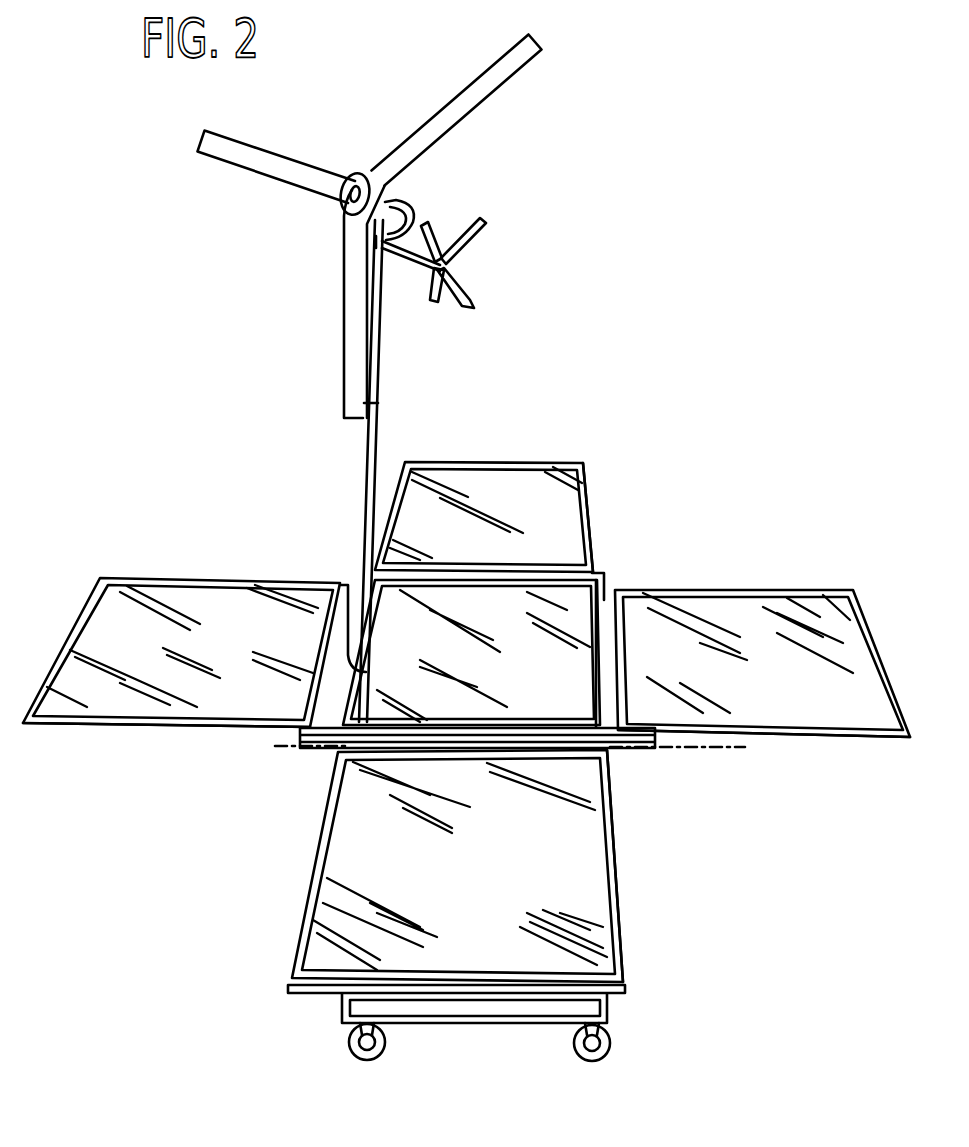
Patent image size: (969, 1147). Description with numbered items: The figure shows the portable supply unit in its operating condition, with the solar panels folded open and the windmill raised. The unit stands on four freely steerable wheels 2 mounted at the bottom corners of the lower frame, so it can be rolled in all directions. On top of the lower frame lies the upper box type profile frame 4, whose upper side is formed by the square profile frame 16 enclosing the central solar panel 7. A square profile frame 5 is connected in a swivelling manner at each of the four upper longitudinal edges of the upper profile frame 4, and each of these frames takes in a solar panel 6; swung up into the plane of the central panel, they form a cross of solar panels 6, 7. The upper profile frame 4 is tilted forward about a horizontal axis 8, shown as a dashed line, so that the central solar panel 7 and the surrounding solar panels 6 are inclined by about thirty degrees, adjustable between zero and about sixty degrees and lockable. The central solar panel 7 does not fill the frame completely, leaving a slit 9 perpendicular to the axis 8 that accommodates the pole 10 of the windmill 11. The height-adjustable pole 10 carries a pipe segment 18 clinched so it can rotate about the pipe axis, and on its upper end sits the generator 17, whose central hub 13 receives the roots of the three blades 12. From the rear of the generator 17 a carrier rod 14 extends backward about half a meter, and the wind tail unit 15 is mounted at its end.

The wheels 2 is at (632, 1068).
The upper box type profile frame 4 is at (613, 563).
The square profile frame 5 is at (594, 513).
The solar panel 6 is at (492, 539).
The central solar panel 7 is at (484, 671).
The horizontal axis 8 is at (298, 745).
The slit 9 is at (326, 581).
The pole 10 is at (368, 437).
The windmill 11 is at (270, 301).
The blades 12 is at (355, 292).
The central hub 13 is at (360, 174).
The carrier rod 14 is at (413, 262).
The wind tail unit 15 is at (457, 263).
The square profile frame 16 is at (605, 693).
The generator 17 is at (433, 205).
The pipe segment 18 is at (370, 375).